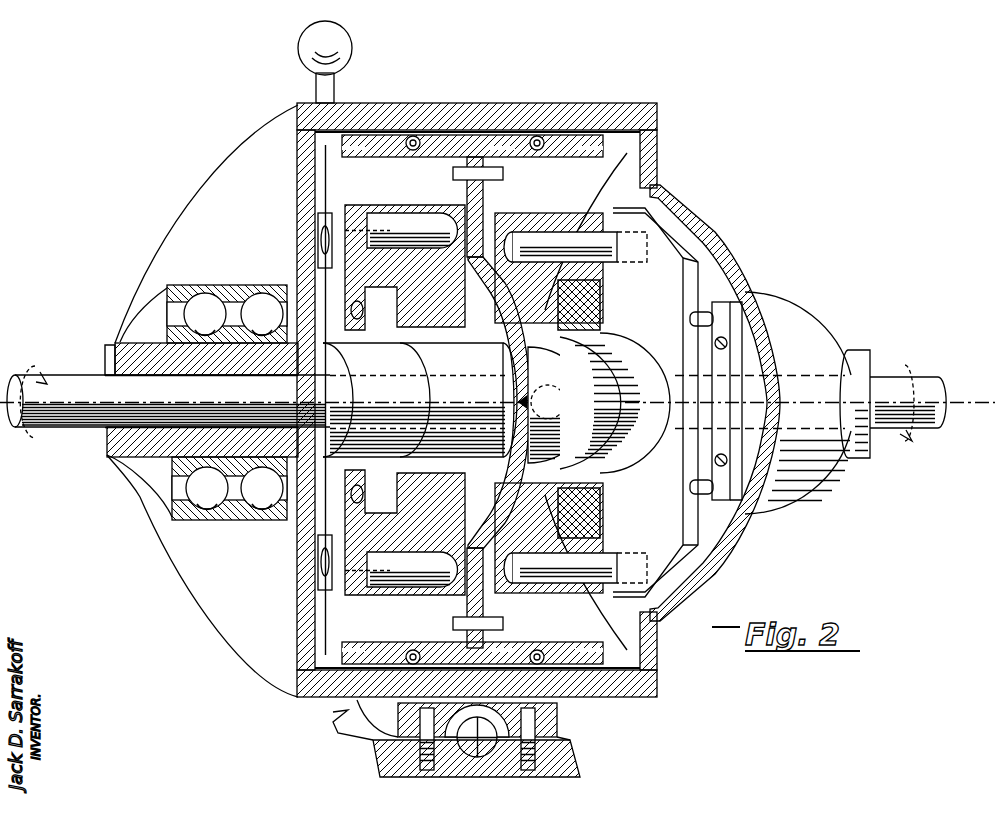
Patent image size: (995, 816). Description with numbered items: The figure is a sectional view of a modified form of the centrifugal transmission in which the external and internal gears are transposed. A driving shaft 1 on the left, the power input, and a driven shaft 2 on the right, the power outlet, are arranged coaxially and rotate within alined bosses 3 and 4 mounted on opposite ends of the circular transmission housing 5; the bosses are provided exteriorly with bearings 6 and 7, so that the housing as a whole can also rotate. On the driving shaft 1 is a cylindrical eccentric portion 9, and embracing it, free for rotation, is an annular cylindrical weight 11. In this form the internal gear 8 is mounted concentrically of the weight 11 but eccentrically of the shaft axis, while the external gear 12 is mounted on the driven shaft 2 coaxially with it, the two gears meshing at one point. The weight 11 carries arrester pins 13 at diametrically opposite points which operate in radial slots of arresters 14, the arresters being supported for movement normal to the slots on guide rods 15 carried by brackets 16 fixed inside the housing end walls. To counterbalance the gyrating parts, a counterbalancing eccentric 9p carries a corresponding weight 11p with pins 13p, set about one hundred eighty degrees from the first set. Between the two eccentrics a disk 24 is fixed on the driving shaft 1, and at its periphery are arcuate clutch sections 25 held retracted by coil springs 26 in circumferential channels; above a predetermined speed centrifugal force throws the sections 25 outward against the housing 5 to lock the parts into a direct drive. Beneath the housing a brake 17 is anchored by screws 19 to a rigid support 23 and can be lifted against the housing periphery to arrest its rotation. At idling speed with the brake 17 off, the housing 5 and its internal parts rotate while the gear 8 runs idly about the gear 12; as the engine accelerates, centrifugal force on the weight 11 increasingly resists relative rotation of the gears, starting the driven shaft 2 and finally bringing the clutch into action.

The driving shaft 1 is at (62, 430).
The driven shaft 2 is at (908, 432).
The boss 3 is at (122, 344).
The boss 4 is at (842, 460).
The transmission housing 5 is at (526, 104).
The bearing 6 is at (215, 285).
The bearing 7 is at (766, 302).
The internal gear 8 is at (604, 306).
The eccentric portion 9 is at (554, 405).
The counterbalancing eccentric 9p is at (420, 398).
The cylindrical weight 11 is at (517, 250).
The counterbalancing weight 11p is at (404, 574).
The external gear 12 is at (626, 366).
The arrester pins 13 is at (603, 250).
The counterbalancing arrester pins 13p is at (380, 222).
The arresters 14 is at (655, 402).
The guide rods 15 is at (702, 313).
The brackets 16 is at (740, 345).
The brake 17 is at (557, 725).
The screws 19 is at (427, 772).
The rigid support 23 is at (583, 764).
The disk 24 is at (490, 236).
The arcuate clutch sections 25 is at (588, 135).
The coil springs 26 is at (413, 150).